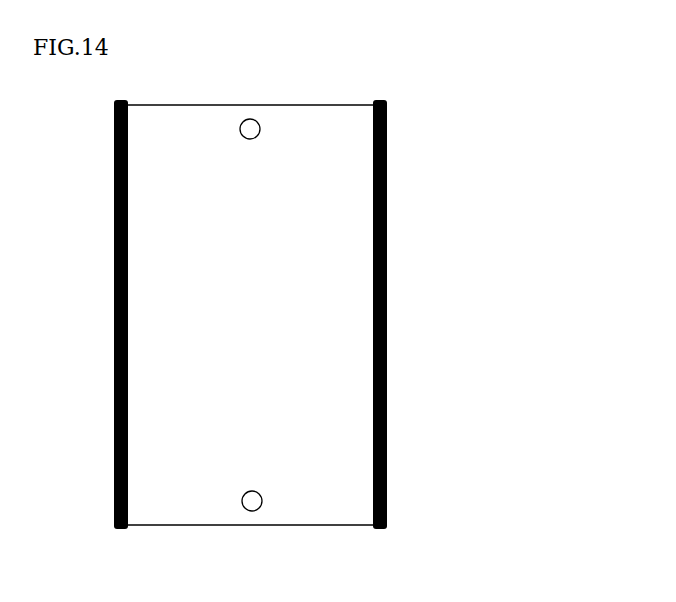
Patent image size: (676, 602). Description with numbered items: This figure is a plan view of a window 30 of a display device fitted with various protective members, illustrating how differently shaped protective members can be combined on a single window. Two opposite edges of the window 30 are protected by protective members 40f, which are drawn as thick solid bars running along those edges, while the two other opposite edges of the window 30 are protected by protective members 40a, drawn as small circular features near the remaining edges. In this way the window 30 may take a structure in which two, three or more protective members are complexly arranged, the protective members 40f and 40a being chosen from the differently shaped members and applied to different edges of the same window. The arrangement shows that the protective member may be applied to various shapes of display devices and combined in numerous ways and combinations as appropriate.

The window 30 is at (152, 300).
The protective member 40f is at (387, 380).
The protective member 40a is at (252, 503).